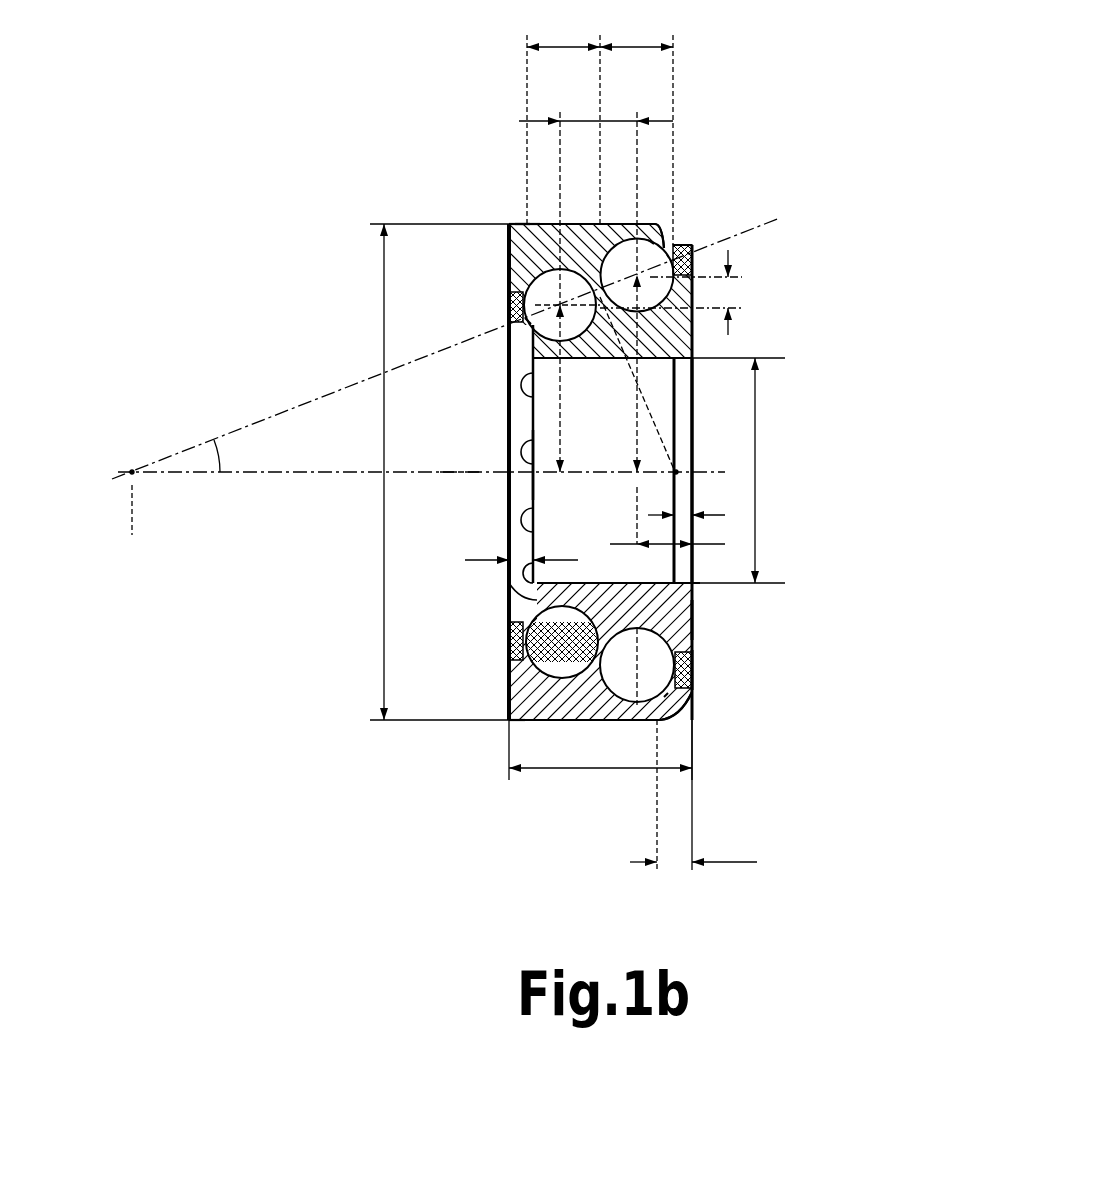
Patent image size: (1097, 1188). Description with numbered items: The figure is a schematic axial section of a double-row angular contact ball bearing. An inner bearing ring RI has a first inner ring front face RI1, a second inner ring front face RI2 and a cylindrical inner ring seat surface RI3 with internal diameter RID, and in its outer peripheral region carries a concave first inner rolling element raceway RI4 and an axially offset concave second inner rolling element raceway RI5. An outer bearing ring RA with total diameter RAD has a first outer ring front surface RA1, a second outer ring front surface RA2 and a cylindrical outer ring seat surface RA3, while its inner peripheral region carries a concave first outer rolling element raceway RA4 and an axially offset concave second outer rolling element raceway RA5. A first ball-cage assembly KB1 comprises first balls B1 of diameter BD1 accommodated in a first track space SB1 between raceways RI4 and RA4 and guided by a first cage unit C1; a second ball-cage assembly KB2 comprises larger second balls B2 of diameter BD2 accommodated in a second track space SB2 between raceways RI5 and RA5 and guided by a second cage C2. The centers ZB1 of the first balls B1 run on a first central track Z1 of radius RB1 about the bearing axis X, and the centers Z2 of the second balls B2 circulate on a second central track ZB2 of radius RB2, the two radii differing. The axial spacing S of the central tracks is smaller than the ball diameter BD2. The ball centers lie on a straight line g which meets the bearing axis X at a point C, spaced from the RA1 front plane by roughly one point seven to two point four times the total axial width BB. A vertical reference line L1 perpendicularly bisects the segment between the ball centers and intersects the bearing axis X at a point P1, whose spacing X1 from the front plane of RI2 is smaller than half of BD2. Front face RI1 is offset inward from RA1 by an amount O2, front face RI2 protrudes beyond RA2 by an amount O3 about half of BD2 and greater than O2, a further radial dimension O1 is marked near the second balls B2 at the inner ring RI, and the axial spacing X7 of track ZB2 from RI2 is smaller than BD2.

The outer bearing ring RA is at (509, 256).
The inner bearing ring RI is at (697, 334).
The first outer ring front surface RA1 is at (507, 222).
The second outer ring front surface RA2 is at (660, 232).
The cylindrical outer ring seat surface RA3 is at (522, 222).
The first outer rolling element raceway RA4 is at (509, 722).
The second outer rolling element raceway RA5 is at (658, 695).
The first inner ring front face RI1 is at (512, 598).
The second inner ring front face RI2 is at (697, 627).
The cylindrical inner ring seat surface RI3 is at (653, 582).
The first inner rolling element raceway RI4 is at (563, 617).
The second inner rolling element raceway RI5 is at (650, 665).
The first balls B1 is at (422, 428).
The first ball-cage assembly KB1 is at (422, 428).
The first track space SB1 is at (525, 290).
The second balls B2 is at (741, 409).
The second ball-cage assembly KB2 is at (741, 409).
The second track space SB2 is at (670, 246).
The first central track Z1 is at (468, 360).
The centers of the first balls ZB1 is at (528, 322).
The centers of the second balls Z2 is at (749, 395).
The second central track ZB2 is at (650, 226).
The first cage unit C1 is at (509, 312).
The second cage C2 is at (690, 232).
The point of intersection of straight line g with bearing axis C is at (421, 486).
The straight line g is at (328, 396).
The vertical reference line L1 is at (645, 415).
The point of intersection P1 is at (677, 470).
The total diameter of the outer bearing ring RAD is at (432, 472).
The internal diameter of the inner bearing ring RID is at (738, 470).
The diameter of the first balls BD1 is at (563, 119).
The diameter of the second balls BD2 is at (636, 129).
The axial spacing of the central tracks S is at (596, 103).
The radius of the first central track RB1 is at (543, 292).
The radius of the second central track RB2 is at (619, 328).
The offset 1 O1 is at (686, 292).
The offset O2 is at (517, 545).
The offset amount O3 is at (695, 795).
The bearing axis X is at (455, 478).
The spacing of point of intersection P1 X1 is at (691, 499).
The axial spacing of the second central track X7 is at (681, 532).
The total axial width of the bearing BB is at (600, 750).